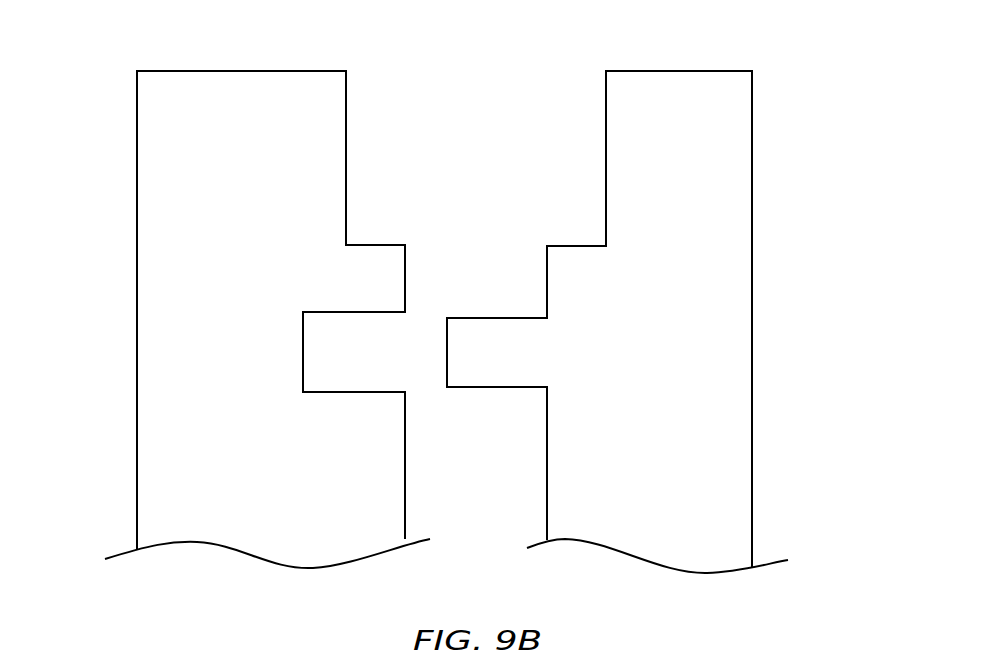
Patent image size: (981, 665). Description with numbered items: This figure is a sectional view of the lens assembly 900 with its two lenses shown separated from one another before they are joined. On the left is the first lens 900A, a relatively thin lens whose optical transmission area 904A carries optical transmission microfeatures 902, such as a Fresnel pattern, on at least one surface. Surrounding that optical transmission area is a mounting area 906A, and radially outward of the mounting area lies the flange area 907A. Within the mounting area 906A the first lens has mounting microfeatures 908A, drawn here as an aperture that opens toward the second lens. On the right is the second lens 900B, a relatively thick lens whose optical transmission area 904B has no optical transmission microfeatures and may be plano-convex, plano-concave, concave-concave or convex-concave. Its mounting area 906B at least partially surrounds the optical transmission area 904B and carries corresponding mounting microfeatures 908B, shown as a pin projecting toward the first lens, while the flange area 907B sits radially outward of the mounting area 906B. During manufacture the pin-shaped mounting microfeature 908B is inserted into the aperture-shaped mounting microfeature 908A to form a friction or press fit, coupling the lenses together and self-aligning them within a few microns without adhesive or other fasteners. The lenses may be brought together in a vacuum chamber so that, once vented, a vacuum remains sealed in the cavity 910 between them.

The lens assembly 900 is at (862, 138).
The first lens 900A is at (225, 67).
The second lens 900B is at (678, 68).
The optical transmission microfeatures 902 is at (405, 499).
The optical transmission area 904A is at (100, 441).
The optical transmission area 904B is at (807, 455).
The mounting area 906A is at (105, 313).
The mounting area 906B is at (803, 327).
The flange area 907A is at (110, 139).
The flange area 907B is at (785, 126).
The mounting microfeatures 908A is at (303, 338).
The mounting microfeatures 908B is at (447, 353).
The cavity 910 is at (508, 496).